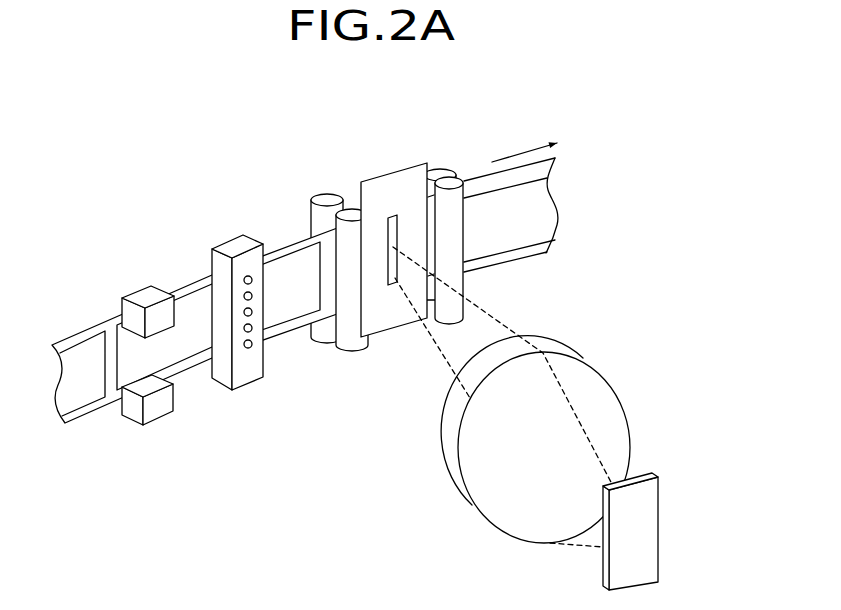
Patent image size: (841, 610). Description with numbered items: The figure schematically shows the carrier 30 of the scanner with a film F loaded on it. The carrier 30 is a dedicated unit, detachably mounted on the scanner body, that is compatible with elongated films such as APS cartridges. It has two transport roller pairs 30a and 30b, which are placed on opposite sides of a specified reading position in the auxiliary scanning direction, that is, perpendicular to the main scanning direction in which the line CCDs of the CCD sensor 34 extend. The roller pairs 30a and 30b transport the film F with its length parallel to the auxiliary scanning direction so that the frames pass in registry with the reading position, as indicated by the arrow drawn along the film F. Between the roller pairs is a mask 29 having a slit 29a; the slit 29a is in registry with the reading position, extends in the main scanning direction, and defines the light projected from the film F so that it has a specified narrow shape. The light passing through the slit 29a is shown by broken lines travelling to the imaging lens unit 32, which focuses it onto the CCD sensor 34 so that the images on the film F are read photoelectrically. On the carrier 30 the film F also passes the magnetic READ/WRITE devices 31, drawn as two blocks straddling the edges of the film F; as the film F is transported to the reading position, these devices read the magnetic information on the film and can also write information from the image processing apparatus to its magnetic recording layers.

The mask 29 is at (388, 312).
The slit 29a is at (395, 214).
The carrier 30 is at (331, 163).
The transport roller pair 30a is at (348, 337).
The transport roller pair 30b is at (447, 253).
The magnetic READ/WRITE device 31 is at (147, 298).
The imaging lens unit 32 is at (585, 383).
The CCD sensor 34 is at (643, 525).
The film F is at (553, 171).